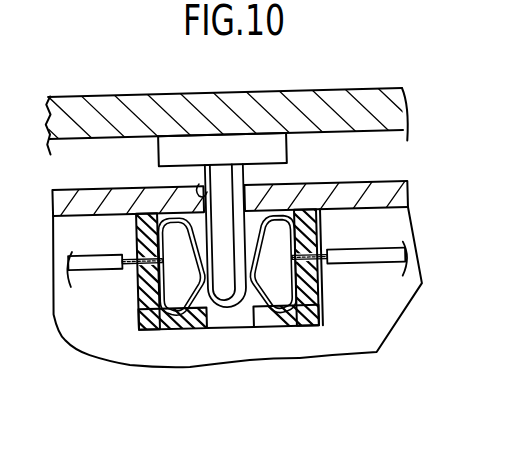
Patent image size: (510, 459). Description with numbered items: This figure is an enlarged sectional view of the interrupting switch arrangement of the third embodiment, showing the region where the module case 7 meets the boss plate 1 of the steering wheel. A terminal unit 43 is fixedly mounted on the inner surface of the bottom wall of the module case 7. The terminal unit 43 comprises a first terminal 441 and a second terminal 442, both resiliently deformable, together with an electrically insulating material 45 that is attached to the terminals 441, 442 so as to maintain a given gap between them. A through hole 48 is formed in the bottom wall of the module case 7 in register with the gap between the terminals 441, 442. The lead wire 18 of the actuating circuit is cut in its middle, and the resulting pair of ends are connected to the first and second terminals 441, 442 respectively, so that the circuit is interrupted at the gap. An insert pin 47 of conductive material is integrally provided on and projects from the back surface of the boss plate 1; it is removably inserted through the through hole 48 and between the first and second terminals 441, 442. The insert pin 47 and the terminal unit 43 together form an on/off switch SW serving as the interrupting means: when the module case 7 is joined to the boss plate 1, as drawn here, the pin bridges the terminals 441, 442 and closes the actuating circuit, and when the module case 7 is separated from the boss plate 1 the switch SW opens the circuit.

The boss plate 1 is at (405, 105).
The module case 7 is at (354, 178).
The lead wire 18 is at (100, 273).
The terminal unit 43 is at (284, 333).
The electrically insulating material 45 is at (173, 328).
The insert pin 47 is at (223, 228).
The through hole 48 is at (202, 190).
The first terminal 441 is at (186, 288).
The second terminal 442 is at (275, 284).
The on/off switch SW is at (255, 347).